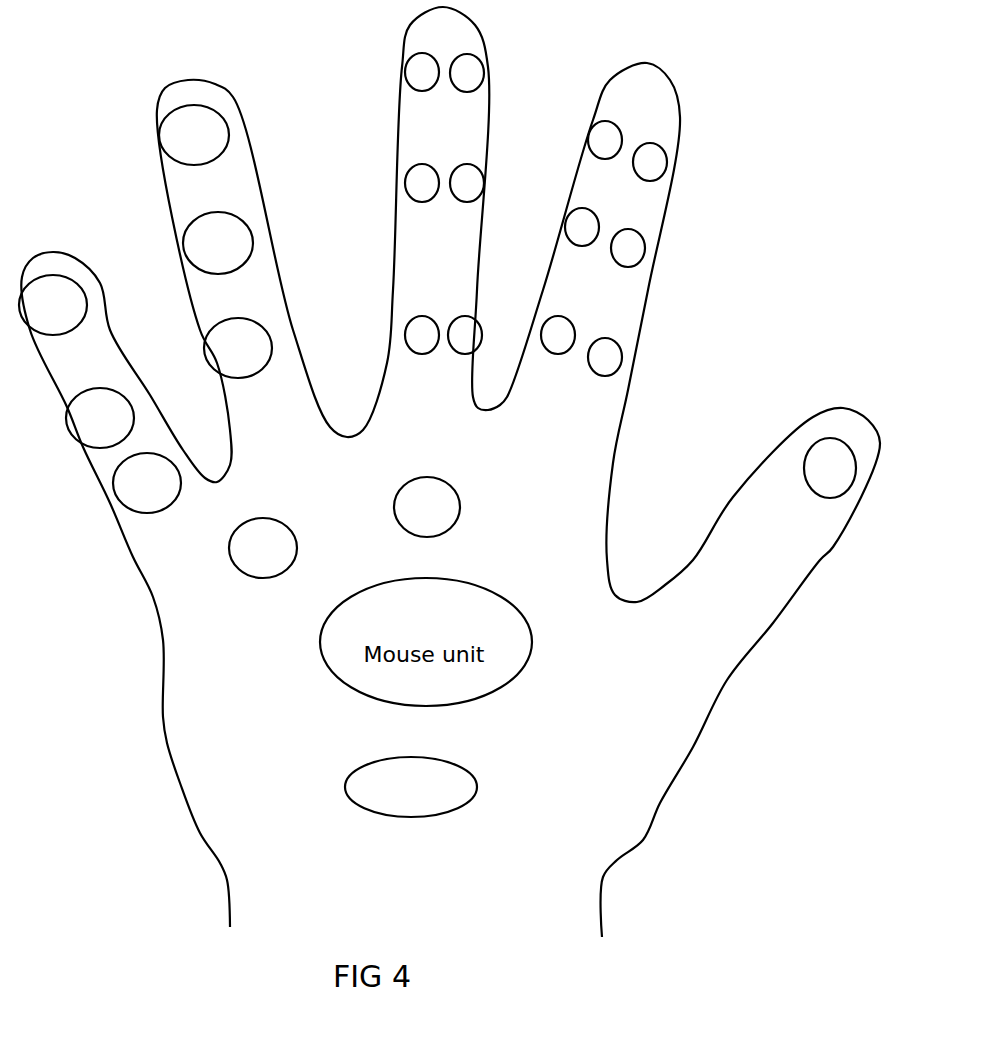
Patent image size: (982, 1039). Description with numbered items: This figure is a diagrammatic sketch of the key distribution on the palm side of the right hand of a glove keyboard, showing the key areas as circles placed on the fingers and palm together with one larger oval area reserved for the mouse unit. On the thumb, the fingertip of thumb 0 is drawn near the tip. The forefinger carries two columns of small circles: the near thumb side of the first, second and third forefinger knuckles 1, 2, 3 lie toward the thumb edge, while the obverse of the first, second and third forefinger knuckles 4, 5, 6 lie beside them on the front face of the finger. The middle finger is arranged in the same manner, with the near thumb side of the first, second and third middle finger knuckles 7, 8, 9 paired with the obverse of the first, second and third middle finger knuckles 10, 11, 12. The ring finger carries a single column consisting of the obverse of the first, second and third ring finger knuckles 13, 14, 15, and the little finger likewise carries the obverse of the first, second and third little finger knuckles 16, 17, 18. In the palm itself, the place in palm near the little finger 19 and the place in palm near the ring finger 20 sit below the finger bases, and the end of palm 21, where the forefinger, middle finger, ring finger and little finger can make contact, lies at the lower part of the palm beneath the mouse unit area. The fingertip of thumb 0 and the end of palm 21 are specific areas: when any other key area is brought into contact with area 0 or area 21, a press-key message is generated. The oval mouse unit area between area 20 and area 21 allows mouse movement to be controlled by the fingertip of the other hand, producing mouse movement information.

The fingertip of thumb 0 is at (830, 468).
The near thumb side of the first forefinger knuckle 1 is at (650, 162).
The near thumb side of the second forefinger knuckle 2 is at (628, 248).
The near thumb side of the third forefinger knuckle 3 is at (605, 357).
The obverse of the first forefinger knuckle 4 is at (605, 140).
The obverse of the second forefinger knuckle 5 is at (582, 227).
The obverse of the third forefinger knuckle 6 is at (558, 335).
The near thumb side of the first middle finger knuckle 7 is at (467, 73).
The near thumb side of the second middle finger knuckle 8 is at (467, 183).
The near thumb side of the third middle finger knuckle 9 is at (465, 335).
The obverse of the first middle finger knuckle 10 is at (422, 72).
The obverse of the second middle finger knuckle 11 is at (422, 183).
The obverse of the third middle finger knuckle 12 is at (422, 335).
The obverse of the first ring finger knuckle 13 is at (194, 135).
The obverse of the second ring finger knuckle 14 is at (218, 243).
The obverse of the third ring finger knuckle 15 is at (238, 348).
The obverse of the first little finger knuckle 16 is at (53, 305).
The obverse of the second little finger knuckle 17 is at (100, 418).
The obverse of the third little finger knuckle 18 is at (147, 483).
The place in palm near the little finger 19 is at (263, 548).
The place in palm near the ring finger 20 is at (427, 507).
The end of palm contactable by the four fingers 21 is at (411, 787).